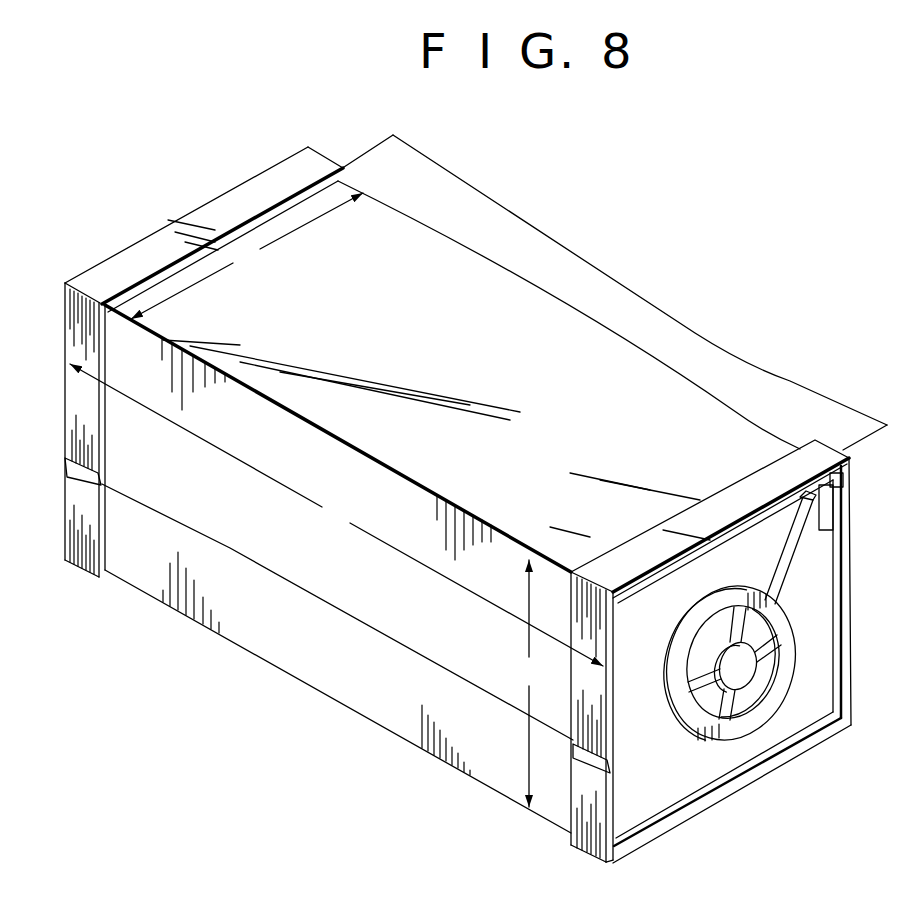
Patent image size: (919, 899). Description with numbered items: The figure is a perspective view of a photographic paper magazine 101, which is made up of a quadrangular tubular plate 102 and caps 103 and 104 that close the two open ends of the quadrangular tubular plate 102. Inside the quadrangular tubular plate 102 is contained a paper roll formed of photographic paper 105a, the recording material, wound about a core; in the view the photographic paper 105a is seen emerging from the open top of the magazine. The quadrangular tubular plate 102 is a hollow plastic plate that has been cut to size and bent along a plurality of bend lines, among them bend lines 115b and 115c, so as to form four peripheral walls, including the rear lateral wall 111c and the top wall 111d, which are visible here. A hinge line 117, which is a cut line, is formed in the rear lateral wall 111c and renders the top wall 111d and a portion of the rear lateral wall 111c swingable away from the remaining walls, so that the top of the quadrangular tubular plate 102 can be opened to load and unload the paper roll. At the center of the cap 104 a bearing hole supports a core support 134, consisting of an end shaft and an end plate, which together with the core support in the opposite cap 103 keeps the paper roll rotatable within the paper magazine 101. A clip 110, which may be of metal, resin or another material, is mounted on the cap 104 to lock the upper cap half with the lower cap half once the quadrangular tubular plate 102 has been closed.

The photographic paper magazine 101 is at (207, 192).
The quadrangular tubular plate 102 is at (617, 353).
The cap 103 is at (107, 270).
The cap 104 is at (735, 497).
The photographic paper 105a is at (777, 383).
The clip 110 is at (826, 542).
The rear lateral wall 111c is at (307, 573).
The top wall 111d is at (540, 330).
The bend line 115b is at (453, 243).
The bend line 115c is at (444, 496).
The hinge line 117 is at (375, 627).
The core support 134 is at (798, 723).